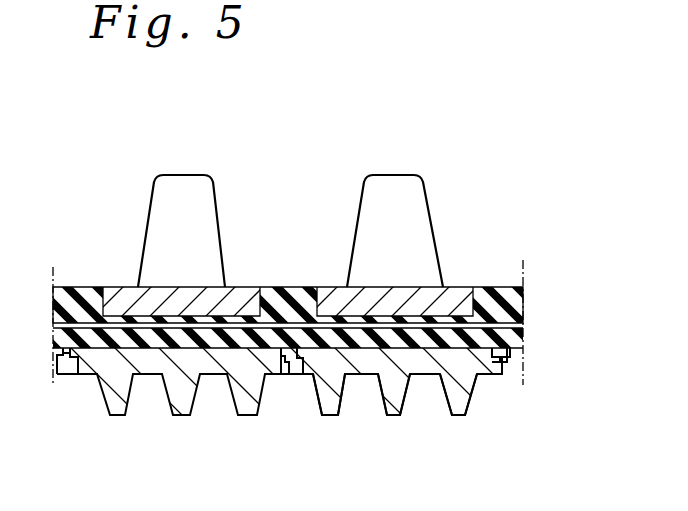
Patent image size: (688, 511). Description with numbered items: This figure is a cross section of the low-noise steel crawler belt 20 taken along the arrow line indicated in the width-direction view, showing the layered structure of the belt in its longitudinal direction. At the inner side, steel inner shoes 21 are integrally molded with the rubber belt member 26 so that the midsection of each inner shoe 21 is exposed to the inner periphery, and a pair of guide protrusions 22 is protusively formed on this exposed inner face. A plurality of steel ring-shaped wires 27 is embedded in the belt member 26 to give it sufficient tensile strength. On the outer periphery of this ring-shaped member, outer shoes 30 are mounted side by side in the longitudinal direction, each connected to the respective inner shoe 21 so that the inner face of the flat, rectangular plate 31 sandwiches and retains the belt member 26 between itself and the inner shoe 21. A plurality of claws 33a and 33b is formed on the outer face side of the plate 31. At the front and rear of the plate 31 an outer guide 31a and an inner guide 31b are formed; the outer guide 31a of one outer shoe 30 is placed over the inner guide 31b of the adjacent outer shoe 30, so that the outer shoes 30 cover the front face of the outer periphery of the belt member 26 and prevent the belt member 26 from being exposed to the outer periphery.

The crawler belt 20 is at (474, 177).
The inner shoe 21 is at (242, 281).
The guide protrusion 22 is at (188, 186).
The belt member 26 is at (515, 303).
The ring-shaped wire 27 is at (522, 337).
The outer shoe 30 is at (478, 401).
The plate 31 is at (430, 367).
The outer guide 31a is at (292, 374).
The inner guide 31b is at (300, 359).
The claw 33a is at (328, 417).
The claw 33b is at (390, 417).